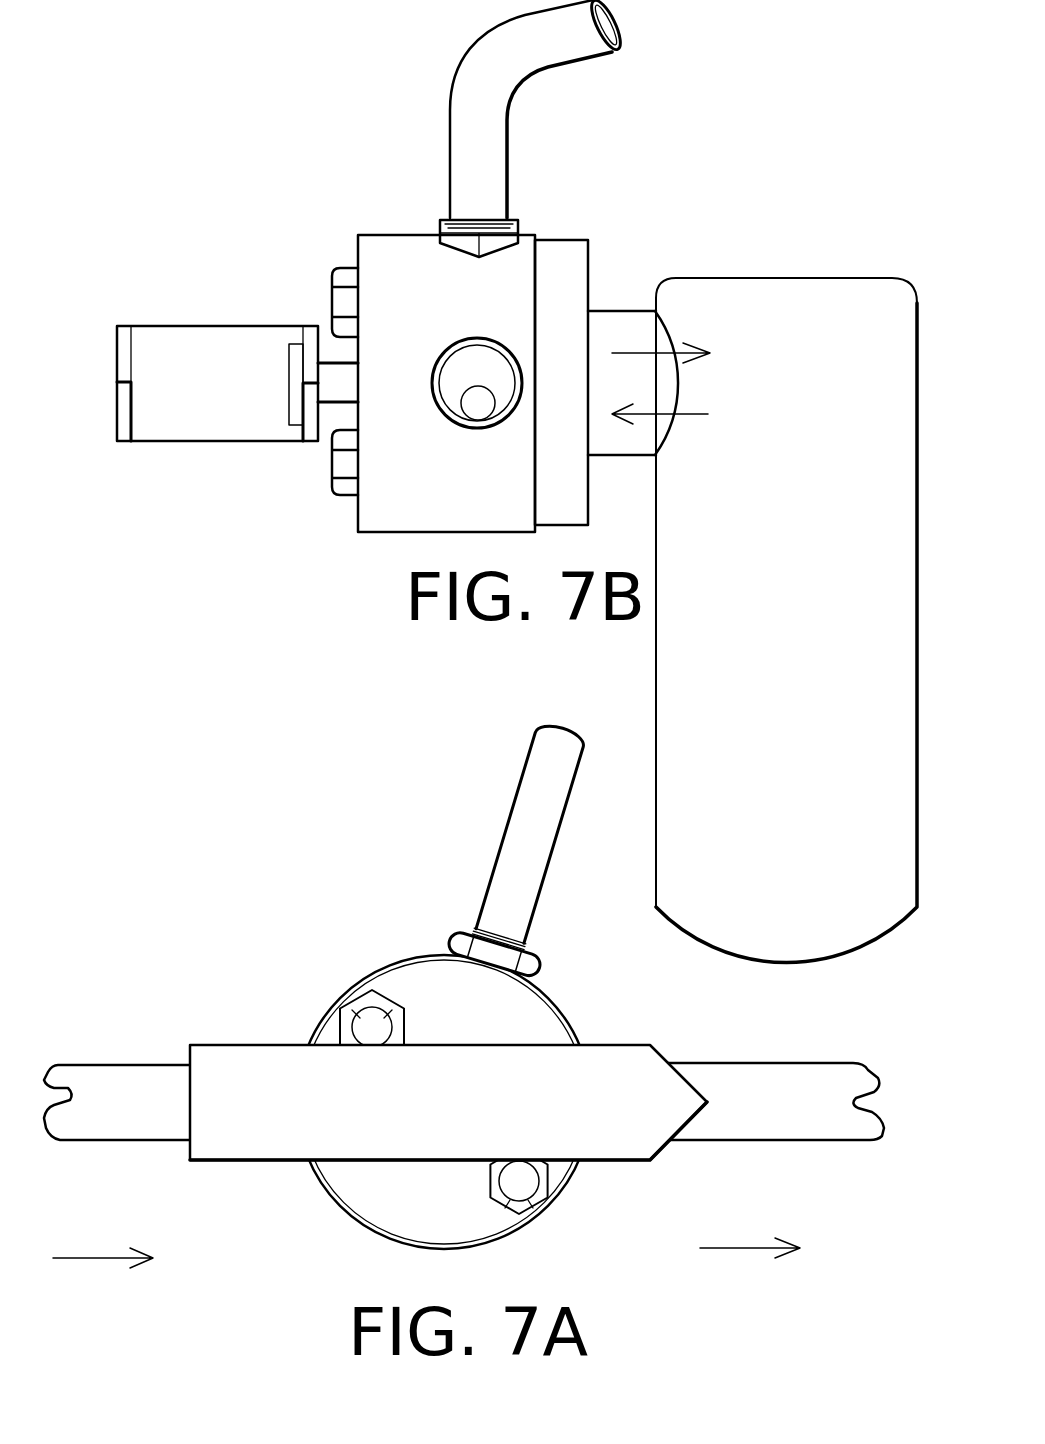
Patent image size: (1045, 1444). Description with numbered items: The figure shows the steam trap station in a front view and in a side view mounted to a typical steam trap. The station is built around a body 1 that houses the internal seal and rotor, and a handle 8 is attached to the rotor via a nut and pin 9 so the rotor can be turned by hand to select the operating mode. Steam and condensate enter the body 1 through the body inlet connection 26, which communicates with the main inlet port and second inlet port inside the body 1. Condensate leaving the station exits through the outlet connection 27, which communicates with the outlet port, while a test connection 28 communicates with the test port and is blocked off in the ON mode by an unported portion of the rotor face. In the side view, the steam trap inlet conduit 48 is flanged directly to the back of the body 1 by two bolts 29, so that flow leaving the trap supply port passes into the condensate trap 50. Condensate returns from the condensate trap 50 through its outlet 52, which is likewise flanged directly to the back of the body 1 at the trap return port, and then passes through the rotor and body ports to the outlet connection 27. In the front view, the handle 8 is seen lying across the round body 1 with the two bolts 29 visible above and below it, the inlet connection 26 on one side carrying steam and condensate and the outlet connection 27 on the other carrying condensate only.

In FIG. 7B, the body 1 is at (400, 522).
In FIG. 7A, the body 1 is at (377, 1216).
In FIG. 7B, the handle 8 is at (182, 430).
In FIG. 7A, the handle 8 is at (262, 1150).
In FIG. 7B, the nut and pin 9 is at (295, 378).
In FIG. 7A, the body inlet connection 26 is at (125, 1083).
In FIG. 7B, the outlet connection 27 is at (463, 370).
In FIG. 7A, the outlet connection 27 is at (765, 1080).
In FIG. 7B, the test connection 28 is at (622, 33).
In FIG. 7A, the test connection 28 is at (530, 772).
In FIG. 7B, the bolts 29 is at (333, 285).
In FIG. 7A, the bolts 29 is at (357, 1003).
In FIG. 7B, the steam trap inlet conduit 48 is at (641, 352).
In FIG. 7B, the condensate trap 50 is at (656, 800).
In FIG. 7B, the outlet 52 is at (688, 412).